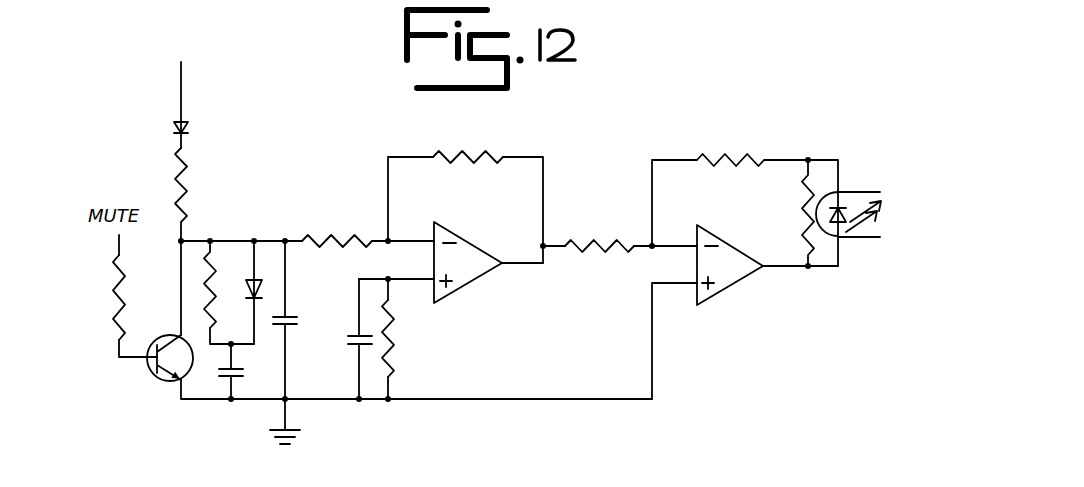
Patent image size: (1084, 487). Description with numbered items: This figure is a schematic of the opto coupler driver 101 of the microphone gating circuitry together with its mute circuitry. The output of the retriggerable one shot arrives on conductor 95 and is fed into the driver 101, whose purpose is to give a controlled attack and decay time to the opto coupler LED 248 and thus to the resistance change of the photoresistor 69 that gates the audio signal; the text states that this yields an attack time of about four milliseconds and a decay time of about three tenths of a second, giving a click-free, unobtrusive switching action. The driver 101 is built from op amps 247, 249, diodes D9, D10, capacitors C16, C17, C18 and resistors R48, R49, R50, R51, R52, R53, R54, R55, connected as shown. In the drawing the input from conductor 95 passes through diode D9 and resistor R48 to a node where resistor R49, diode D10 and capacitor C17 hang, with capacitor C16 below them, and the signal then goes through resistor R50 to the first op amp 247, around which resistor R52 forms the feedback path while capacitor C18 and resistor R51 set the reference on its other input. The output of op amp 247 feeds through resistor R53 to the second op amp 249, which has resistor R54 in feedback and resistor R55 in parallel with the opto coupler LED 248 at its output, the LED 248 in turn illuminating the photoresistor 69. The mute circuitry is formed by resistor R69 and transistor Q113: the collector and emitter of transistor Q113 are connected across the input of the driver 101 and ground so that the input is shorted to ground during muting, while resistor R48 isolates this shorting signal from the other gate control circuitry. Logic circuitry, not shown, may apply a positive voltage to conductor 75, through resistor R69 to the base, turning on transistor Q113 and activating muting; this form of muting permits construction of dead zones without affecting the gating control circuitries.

The conductor 95 is at (181, 104).
The diode D9 is at (199, 131).
The resistor R48 is at (203, 194).
The conductor 75 is at (119, 247).
The resistor R69 is at (99, 297).
The transistor Q113 is at (143, 363).
The resistor R49 is at (226, 284).
The diode D10 is at (266, 292).
The capacitor C16 is at (247, 371).
The capacitor C17 is at (301, 320).
The resistor R50 is at (337, 230).
The capacitor C18 is at (340, 339).
The resistor R51 is at (409, 338).
The opto coupler driver 101 is at (465, 205).
The op amp 247 is at (466, 273).
The resistor R52 is at (468, 146).
The resistor R53 is at (599, 233).
The op amp 249 is at (727, 282).
The resistor R54 is at (745, 198).
The resistor R55 is at (783, 213).
The photoresistor 69 is at (862, 240).
The opto coupler LED 248 is at (846, 230).